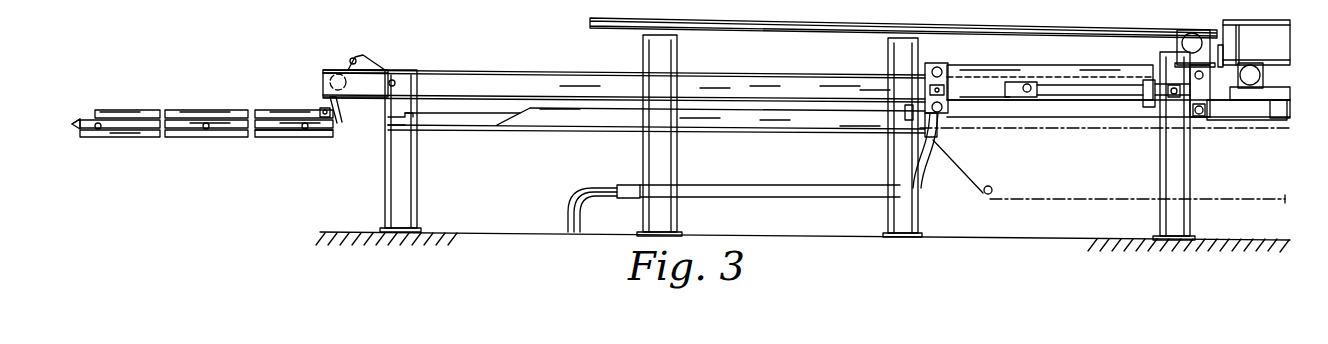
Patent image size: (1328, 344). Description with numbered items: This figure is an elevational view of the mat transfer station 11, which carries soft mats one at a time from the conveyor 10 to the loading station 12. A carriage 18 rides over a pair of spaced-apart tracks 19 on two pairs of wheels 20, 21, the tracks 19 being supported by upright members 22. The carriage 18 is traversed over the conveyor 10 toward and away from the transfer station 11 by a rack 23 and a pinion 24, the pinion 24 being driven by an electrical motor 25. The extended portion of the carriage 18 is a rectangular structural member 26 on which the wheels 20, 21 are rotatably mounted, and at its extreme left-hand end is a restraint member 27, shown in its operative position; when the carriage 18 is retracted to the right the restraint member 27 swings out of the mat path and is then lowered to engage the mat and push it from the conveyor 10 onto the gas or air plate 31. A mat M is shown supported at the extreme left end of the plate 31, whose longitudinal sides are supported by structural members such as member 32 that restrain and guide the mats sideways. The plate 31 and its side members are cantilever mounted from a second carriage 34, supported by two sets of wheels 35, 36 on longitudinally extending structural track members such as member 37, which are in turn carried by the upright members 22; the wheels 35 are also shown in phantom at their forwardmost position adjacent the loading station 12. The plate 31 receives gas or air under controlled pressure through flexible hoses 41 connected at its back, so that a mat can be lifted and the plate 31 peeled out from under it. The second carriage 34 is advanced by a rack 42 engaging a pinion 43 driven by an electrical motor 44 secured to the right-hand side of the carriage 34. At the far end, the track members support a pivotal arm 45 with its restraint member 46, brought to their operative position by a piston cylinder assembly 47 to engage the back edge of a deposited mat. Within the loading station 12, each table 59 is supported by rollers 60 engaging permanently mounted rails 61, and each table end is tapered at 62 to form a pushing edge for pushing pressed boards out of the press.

The conveyor 10 is at (1064, 203).
The mat transfer station 11 is at (524, 64).
The loading station 12 is at (200, 116).
The carriage 18 is at (1250, 118).
The tracks 19 is at (1068, 88).
The wheels 20 is at (1025, 95).
The wheels 21 is at (1170, 100).
The upright members 22 is at (412, 198).
The rack 23 is at (1283, 55).
The pinion 24 is at (1265, 78).
The electrical motor 25 is at (1280, 93).
The rectangular structural member 26 is at (1117, 72).
The restraint member 27 is at (905, 115).
The gas or air plate 31 is at (472, 118).
The structural member 32 is at (545, 112).
The second carriage 34 is at (980, 70).
The wheels 35 is at (939, 68).
The wheels 36 is at (1193, 72).
The structural track member 37 is at (745, 78).
The flexible hoses 41 is at (570, 218).
The rack 42 is at (1082, 25).
The pinion 43 is at (1195, 35).
The electrical motor 44 is at (1182, 40).
The pivotal arm 45 is at (338, 108).
The restraint member 46 is at (321, 108).
The piston cylinder assembly 47 is at (362, 64).
The table 59 is at (195, 137).
The rollers 60 is at (100, 131).
The rails 61 is at (265, 138).
The tapered end 62 is at (82, 131).
The mat M is at (455, 112).